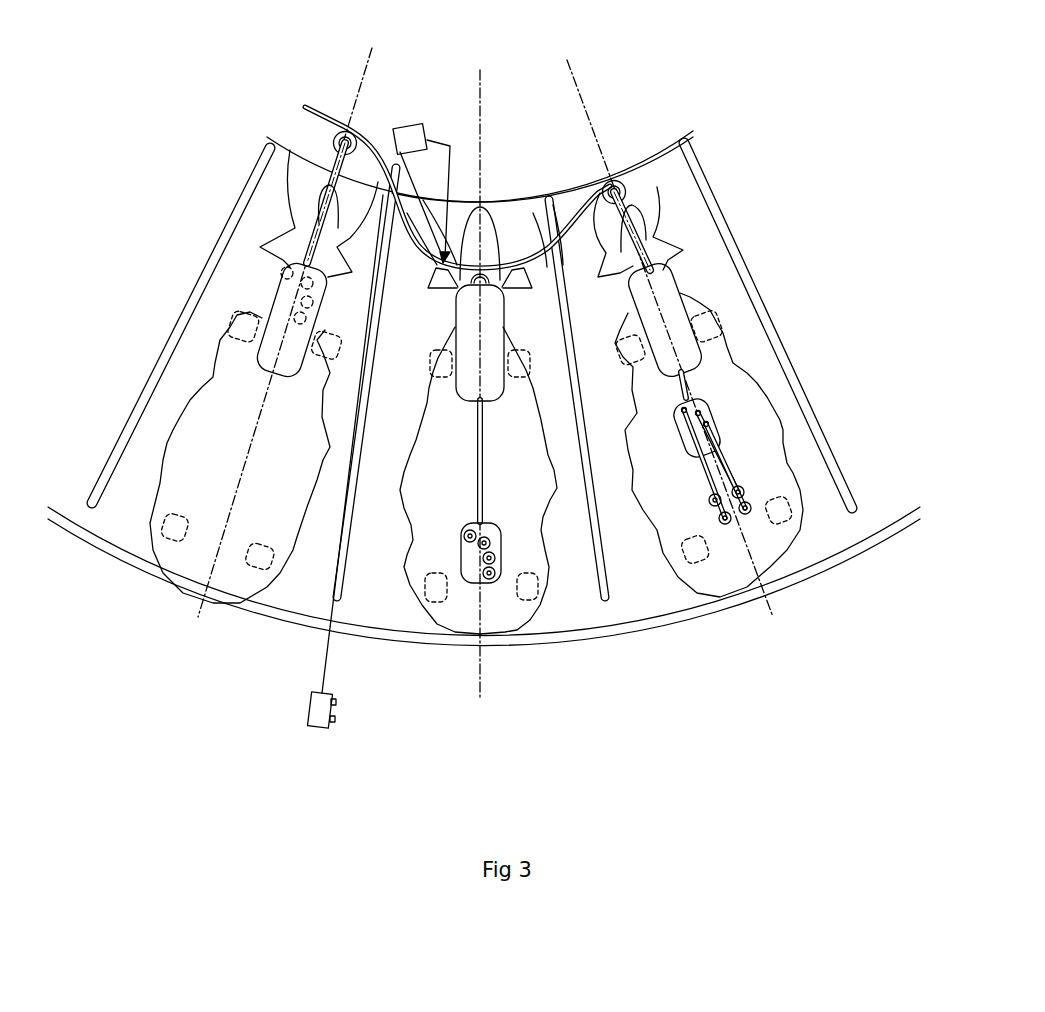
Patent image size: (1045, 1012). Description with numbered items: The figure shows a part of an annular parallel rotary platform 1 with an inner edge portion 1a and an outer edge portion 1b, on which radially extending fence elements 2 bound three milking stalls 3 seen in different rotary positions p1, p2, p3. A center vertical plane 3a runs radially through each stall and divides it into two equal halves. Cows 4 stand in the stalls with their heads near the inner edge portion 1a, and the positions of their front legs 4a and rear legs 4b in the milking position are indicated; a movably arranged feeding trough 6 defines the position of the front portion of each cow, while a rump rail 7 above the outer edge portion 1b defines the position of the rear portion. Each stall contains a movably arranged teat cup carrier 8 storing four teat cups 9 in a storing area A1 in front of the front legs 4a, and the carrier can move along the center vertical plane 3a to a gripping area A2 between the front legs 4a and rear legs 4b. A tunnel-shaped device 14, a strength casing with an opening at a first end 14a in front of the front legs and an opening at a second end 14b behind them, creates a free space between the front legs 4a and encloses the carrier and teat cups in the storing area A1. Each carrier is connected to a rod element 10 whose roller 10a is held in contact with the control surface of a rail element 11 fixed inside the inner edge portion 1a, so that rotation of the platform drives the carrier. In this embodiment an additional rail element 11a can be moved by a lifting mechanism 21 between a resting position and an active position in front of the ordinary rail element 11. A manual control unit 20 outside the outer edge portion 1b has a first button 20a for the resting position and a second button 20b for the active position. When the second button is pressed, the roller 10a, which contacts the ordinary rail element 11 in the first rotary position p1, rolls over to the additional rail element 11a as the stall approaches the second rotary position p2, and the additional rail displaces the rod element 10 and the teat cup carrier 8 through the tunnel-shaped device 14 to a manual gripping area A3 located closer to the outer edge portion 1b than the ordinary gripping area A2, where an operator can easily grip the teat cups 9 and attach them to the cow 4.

The rotary platform 1 is at (655, 590).
The inner edge portion 1a is at (562, 187).
The outer edge portion 1b is at (267, 628).
The fence elements 2 is at (195, 303).
The milking stalls 3 is at (167, 413).
The center vertical plane 3a is at (370, 64).
The cows 4 is at (182, 470).
The front legs 4a is at (240, 333).
The rear legs 4b is at (183, 527).
The feeding trough 6 is at (307, 177).
The rump rail 7 is at (197, 592).
The teat cup carrier 8 is at (312, 308).
The teat cups 9 is at (307, 285).
The rod element 10 is at (320, 217).
The roller 10a is at (349, 127).
The rail element 11 is at (303, 107).
The additional rail element 11a is at (427, 265).
The tunnel-shaped device 14 is at (278, 327).
The first end 14a is at (612, 264).
The second end 14b is at (273, 377).
The manual control unit 20 is at (323, 710).
The first button 20a is at (335, 720).
The second button 20b is at (336, 703).
The lifting mechanism 21 is at (410, 133).
The storing area A1 is at (287, 293).
The gripping area A2 is at (687, 440).
The manual gripping area A3 is at (467, 558).
The first rotary position p1 is at (132, 527).
The second rotary position p2 is at (382, 592).
The third rotary position p3 is at (823, 532).